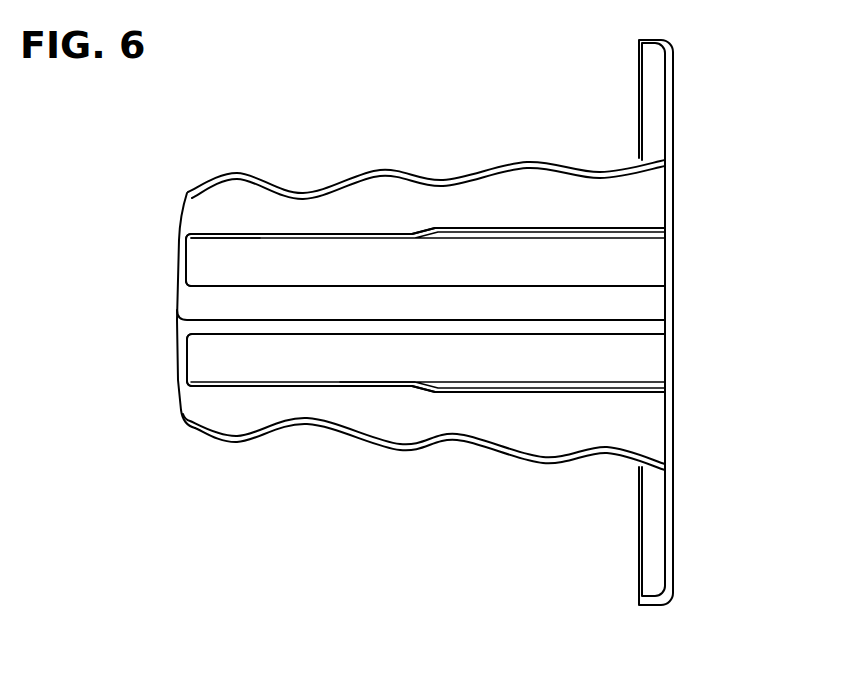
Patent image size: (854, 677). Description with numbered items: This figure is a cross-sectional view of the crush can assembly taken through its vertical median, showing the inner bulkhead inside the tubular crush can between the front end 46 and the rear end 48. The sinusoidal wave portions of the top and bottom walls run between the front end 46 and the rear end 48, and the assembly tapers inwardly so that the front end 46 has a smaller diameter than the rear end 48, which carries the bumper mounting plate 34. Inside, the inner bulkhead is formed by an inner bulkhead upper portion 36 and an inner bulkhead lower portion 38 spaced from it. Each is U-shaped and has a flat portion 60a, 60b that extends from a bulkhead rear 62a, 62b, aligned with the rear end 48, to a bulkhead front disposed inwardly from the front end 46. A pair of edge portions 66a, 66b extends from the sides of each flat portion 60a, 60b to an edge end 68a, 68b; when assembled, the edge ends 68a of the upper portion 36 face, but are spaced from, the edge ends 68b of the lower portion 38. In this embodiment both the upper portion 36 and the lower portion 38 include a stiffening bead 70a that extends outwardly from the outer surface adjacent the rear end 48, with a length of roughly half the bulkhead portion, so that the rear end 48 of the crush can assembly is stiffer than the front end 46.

The bumper mounting plate 34 is at (675, 80).
The inner bulkhead upper portion 36 is at (459, 231).
The inner bulkhead lower portion 38 is at (523, 393).
The front end 46 is at (180, 393).
The rear end 48 is at (673, 177).
The flat portion 60a is at (300, 233).
The flat portion 60b is at (317, 388).
The bulkhead rear 62a is at (673, 279).
The bulkhead rear 62b is at (192, 257).
The edge portion 66a is at (215, 232).
The edge portion 66b is at (401, 370).
The edge end 68a is at (340, 285).
The edge end 68b is at (277, 335).
The stiffening bead 70a is at (555, 228).